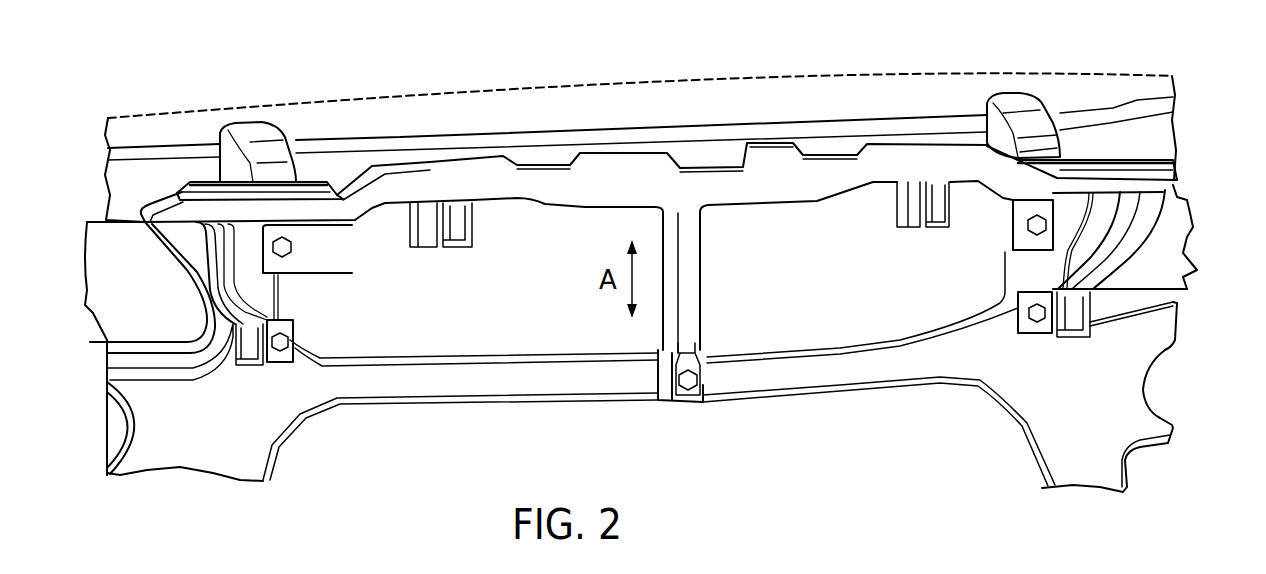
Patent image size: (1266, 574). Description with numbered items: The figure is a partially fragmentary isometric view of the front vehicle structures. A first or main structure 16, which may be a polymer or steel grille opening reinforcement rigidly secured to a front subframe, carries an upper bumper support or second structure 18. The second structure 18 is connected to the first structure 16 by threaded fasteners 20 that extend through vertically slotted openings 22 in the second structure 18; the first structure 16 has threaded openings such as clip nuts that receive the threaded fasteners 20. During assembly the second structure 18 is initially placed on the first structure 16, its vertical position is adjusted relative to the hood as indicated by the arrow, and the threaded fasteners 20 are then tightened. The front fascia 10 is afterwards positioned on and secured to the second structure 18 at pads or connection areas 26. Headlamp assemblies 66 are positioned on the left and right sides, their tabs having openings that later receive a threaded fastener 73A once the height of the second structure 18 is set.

The front fascia 10 is at (795, 96).
The first structure 16 is at (1003, 421).
The second structure 18 is at (1175, 222).
The threaded fasteners 20 is at (283, 241).
The vertically slotted openings 22 is at (297, 237).
The connection areas 26 is at (223, 190).
The headlamp assemblies 66 is at (100, 322).
The threaded fastener 73A is at (297, 334).